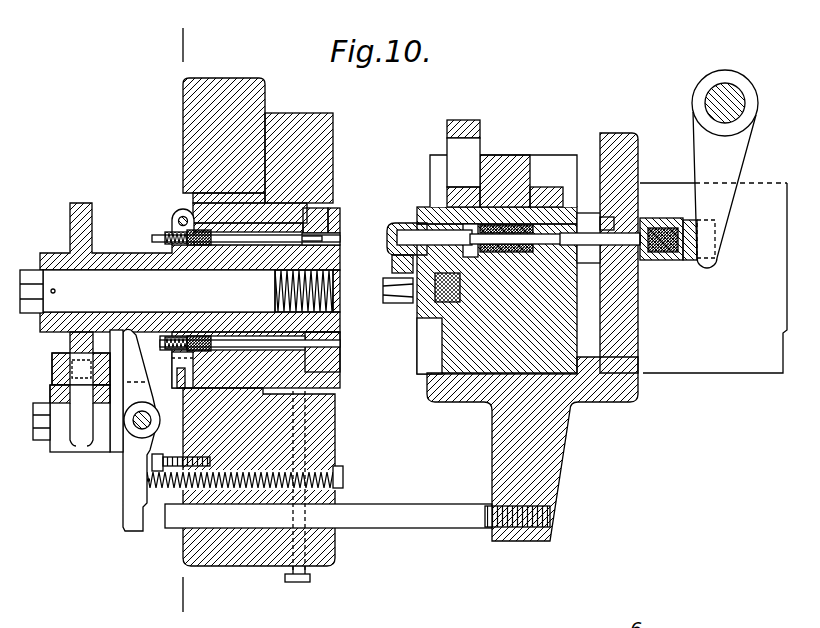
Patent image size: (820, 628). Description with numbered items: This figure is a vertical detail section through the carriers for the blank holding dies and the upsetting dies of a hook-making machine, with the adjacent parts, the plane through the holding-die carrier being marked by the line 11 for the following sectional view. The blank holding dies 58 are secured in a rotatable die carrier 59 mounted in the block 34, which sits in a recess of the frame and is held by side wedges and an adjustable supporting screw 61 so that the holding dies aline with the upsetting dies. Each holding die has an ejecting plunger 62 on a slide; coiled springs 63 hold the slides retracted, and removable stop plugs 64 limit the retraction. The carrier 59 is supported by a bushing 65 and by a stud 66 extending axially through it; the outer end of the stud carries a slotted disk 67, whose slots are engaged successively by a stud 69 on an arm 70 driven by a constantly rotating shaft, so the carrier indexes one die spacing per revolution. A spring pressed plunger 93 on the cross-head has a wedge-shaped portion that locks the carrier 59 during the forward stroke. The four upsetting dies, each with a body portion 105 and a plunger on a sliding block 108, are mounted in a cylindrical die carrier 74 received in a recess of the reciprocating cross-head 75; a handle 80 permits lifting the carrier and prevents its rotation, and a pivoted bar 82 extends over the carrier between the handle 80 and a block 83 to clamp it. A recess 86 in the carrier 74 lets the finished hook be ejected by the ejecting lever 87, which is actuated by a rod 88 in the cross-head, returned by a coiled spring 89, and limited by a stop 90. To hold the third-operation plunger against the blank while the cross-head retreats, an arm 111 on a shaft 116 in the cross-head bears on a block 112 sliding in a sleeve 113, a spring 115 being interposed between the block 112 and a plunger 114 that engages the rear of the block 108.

The section line 11— 11 is at (181, 317).
The block 34 is at (323, 130).
The bushing 65 is at (277, 223).
The coiled springs 63 is at (181, 208).
The removable stop plugs 64 is at (168, 233).
The disk 67 is at (69, 214).
The stud 66 is at (128, 283).
The die carrier 59 is at (313, 228).
The blank holding dies 58 is at (336, 232).
The ejecting plunger 62 is at (340, 262).
The spring pressed plunger 93 is at (393, 293).
The die carrier 74 is at (422, 317).
The block 108 is at (433, 238).
The body portion 105 is at (420, 226).
The handle 80 is at (466, 127).
The bar 82 is at (497, 162).
The block 83 is at (543, 192).
The cross-head 75 is at (625, 137).
The shaft 116 is at (727, 90).
The sleeve 113 is at (646, 218).
The arm 111 is at (728, 171).
The plunger 114 is at (608, 242).
The block 112 is at (688, 244).
The spring 115 is at (656, 256).
The recess 86 is at (432, 368).
The stud 69 is at (80, 370).
The arm 70 is at (72, 400).
The ejecting lever 87 is at (130, 463).
The stop 90 is at (166, 458).
The coiled spring 89 is at (333, 469).
The rod 88 is at (400, 505).
The adjustable supporting screw 61 is at (298, 582).